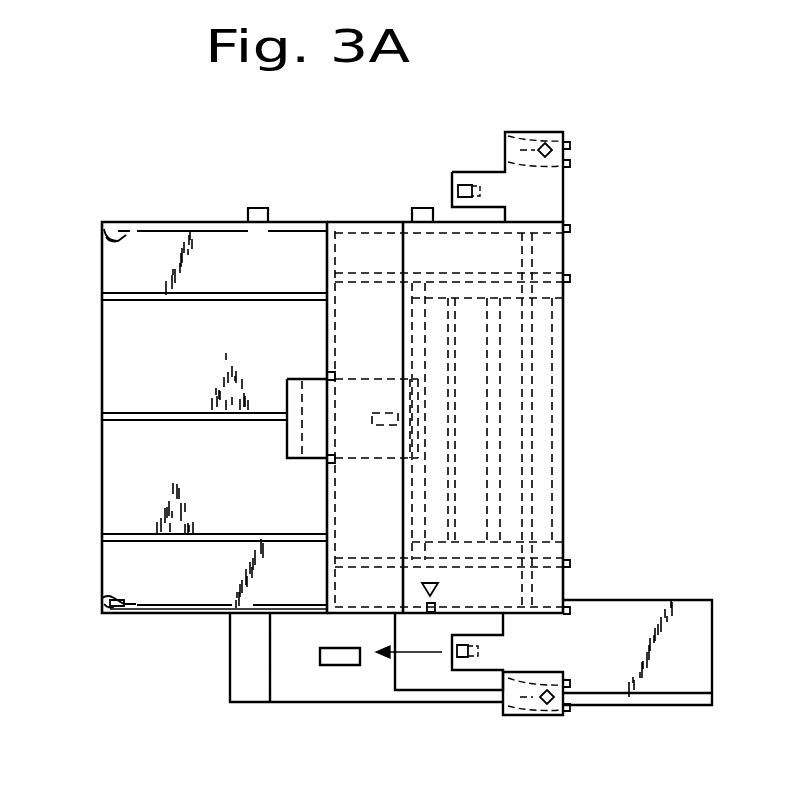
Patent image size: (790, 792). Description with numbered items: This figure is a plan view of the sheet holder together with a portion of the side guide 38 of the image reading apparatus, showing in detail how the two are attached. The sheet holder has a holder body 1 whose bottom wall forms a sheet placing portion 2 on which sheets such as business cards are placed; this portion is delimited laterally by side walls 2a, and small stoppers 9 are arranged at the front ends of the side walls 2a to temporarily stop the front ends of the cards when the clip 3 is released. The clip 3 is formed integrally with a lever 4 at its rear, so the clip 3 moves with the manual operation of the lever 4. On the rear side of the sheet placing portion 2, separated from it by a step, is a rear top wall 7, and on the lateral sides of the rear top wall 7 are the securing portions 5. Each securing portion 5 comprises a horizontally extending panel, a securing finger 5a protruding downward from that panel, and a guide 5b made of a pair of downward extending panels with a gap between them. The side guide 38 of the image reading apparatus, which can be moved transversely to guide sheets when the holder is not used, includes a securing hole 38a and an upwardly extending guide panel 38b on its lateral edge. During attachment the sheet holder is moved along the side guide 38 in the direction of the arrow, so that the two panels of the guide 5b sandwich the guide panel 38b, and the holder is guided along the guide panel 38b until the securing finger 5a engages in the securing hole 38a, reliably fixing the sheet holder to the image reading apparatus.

The holder body 1 is at (323, 214).
The sheet placing portion 2 is at (108, 478).
The side walls 2a is at (155, 616).
The clip 3 is at (312, 448).
The lever 4 is at (545, 350).
The securing portions 5 is at (530, 151).
The securing finger 5a is at (478, 190).
The guide 5b is at (540, 132).
The rear top wall 7 is at (563, 458).
The small stoppers 9 is at (102, 248).
The side guide 38 is at (240, 685).
The securing hole 38a is at (336, 668).
The guide panel 38b is at (670, 705).